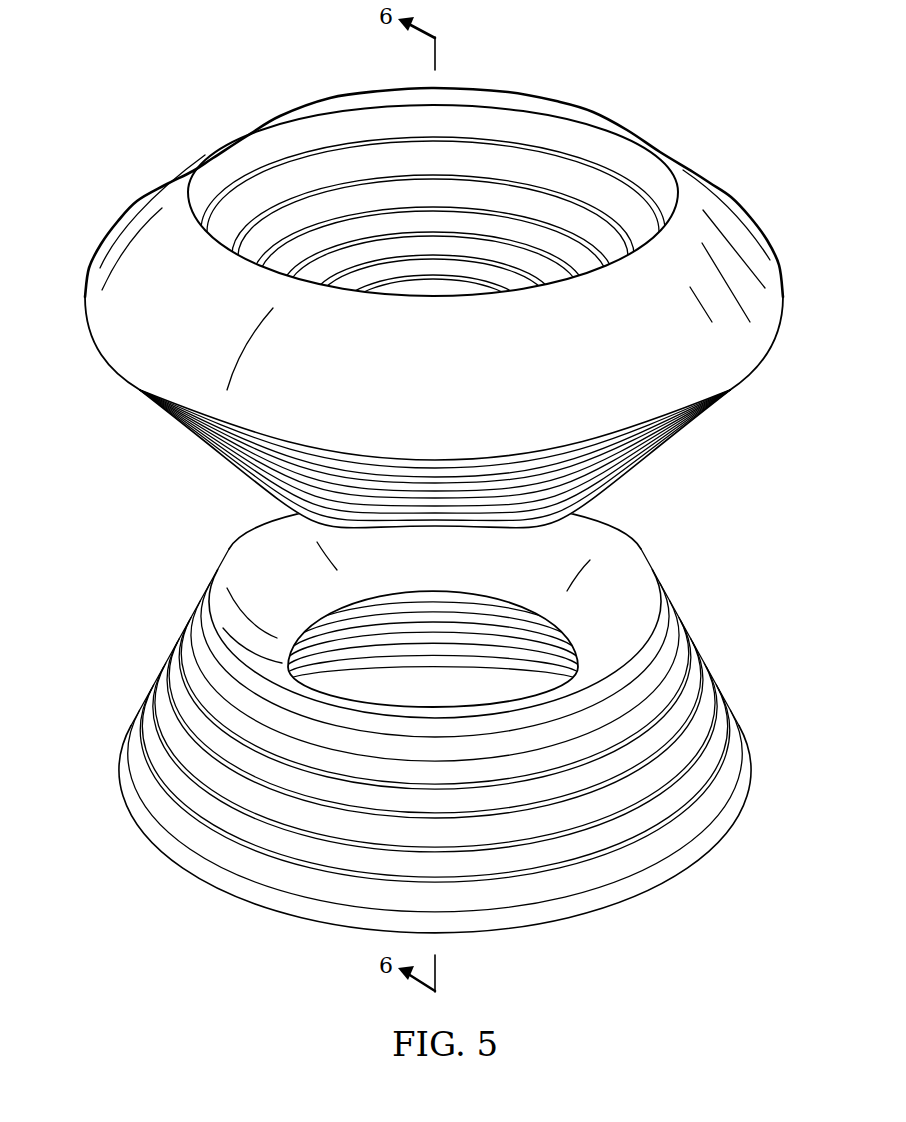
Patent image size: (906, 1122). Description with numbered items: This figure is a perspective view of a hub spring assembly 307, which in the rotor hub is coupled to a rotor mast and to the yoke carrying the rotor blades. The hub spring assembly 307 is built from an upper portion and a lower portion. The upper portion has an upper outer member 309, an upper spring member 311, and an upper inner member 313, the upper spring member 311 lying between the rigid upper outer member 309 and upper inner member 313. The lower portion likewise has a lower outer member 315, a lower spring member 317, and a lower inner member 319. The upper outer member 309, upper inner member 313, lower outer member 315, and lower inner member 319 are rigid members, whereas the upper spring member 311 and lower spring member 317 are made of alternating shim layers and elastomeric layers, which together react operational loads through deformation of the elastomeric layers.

The hub spring assembly 307 is at (248, 82).
The upper outer member 309 is at (118, 322).
The upper spring member 311 is at (340, 130).
The upper inner member 313 is at (428, 288).
The lower outer member 315 is at (138, 815).
The lower spring member 317 is at (197, 688).
The lower inner member 319 is at (238, 568).